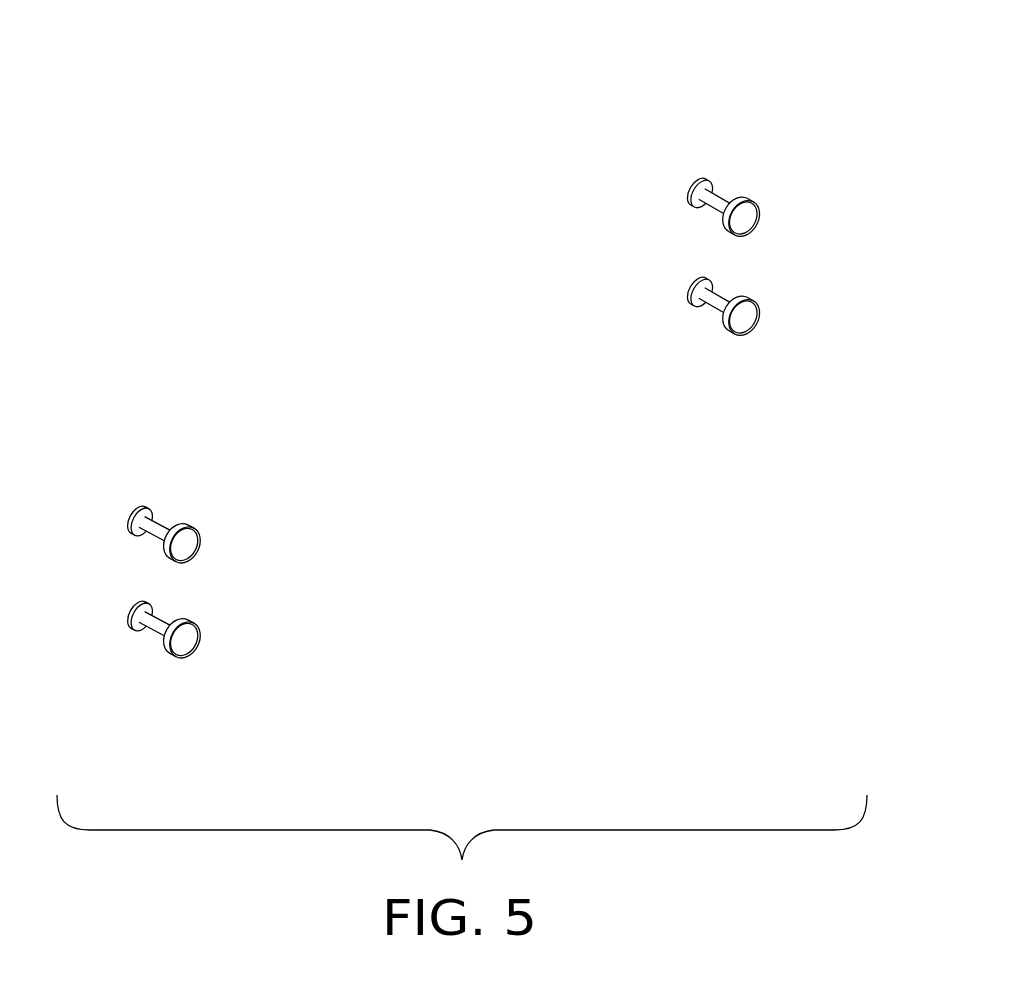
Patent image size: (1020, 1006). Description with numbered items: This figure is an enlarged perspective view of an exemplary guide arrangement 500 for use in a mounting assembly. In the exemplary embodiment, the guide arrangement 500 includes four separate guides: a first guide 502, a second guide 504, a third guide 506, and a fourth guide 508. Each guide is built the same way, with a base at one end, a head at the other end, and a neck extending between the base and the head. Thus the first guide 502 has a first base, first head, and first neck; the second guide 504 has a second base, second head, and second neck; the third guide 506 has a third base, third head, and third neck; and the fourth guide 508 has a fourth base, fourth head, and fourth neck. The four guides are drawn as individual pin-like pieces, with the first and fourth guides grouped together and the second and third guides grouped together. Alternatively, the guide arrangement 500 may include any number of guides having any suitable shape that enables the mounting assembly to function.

The guide arrangement 500 is at (265, 50).
The first guide 502 is at (180, 482).
The second guide 504 is at (740, 162).
The third guide 506 is at (763, 350).
The fourth guide 508 is at (216, 672).